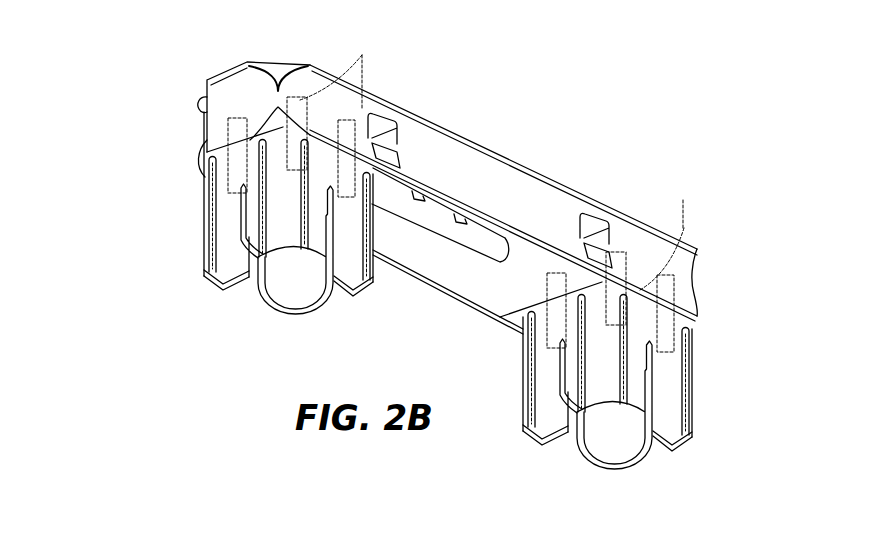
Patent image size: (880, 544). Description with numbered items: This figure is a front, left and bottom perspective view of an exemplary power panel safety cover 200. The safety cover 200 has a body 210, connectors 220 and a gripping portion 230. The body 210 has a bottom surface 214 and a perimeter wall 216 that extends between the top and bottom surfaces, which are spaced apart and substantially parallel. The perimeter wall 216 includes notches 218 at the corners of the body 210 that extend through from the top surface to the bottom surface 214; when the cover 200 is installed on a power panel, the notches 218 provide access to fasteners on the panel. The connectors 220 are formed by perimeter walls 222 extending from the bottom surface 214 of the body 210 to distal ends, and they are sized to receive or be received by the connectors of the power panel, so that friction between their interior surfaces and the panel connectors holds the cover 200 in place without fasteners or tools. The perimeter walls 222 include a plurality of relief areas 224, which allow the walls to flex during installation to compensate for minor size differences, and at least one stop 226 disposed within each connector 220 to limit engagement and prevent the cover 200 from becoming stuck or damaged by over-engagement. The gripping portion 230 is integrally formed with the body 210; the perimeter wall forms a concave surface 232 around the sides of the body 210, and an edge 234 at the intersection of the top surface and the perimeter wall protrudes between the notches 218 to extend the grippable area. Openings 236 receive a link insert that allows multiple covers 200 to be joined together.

The power panel safety cover 200 is at (620, 73).
The body 210 is at (463, 111).
The bottom surface 214 is at (473, 306).
The perimeter wall 216 is at (508, 178).
The notches 218 is at (284, 62).
The connectors 220 is at (181, 297).
The perimeter walls 222 is at (398, 268).
The relief areas 224 is at (247, 297).
The stop 226 is at (466, 191).
The gripping portion 230 is at (705, 287).
The concave surface 232 is at (553, 218).
The edge 234 is at (553, 183).
The openings 236 is at (387, 128).